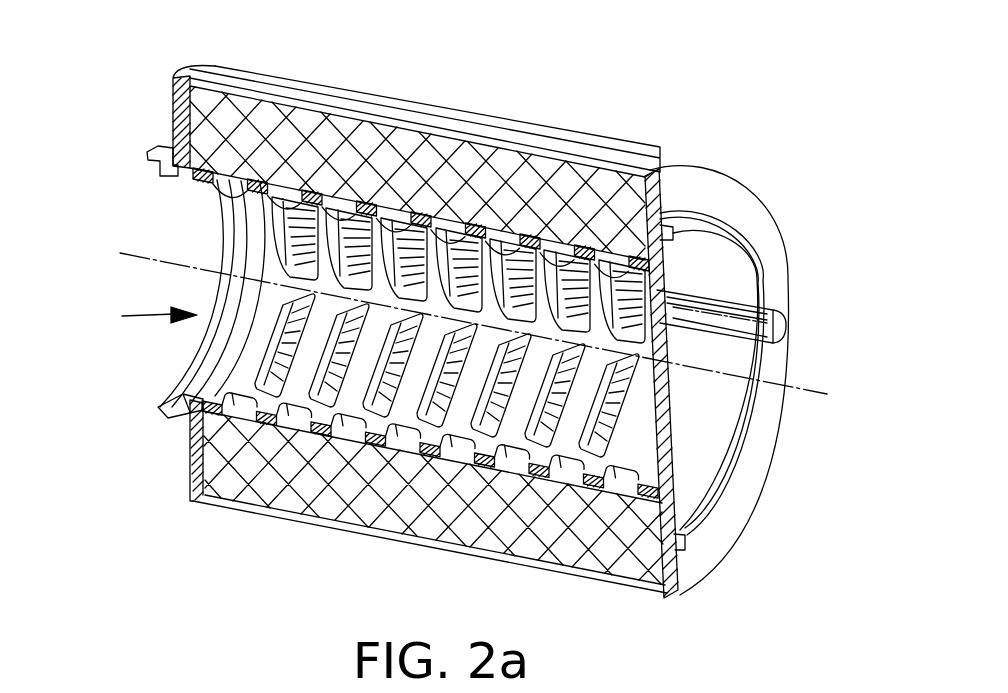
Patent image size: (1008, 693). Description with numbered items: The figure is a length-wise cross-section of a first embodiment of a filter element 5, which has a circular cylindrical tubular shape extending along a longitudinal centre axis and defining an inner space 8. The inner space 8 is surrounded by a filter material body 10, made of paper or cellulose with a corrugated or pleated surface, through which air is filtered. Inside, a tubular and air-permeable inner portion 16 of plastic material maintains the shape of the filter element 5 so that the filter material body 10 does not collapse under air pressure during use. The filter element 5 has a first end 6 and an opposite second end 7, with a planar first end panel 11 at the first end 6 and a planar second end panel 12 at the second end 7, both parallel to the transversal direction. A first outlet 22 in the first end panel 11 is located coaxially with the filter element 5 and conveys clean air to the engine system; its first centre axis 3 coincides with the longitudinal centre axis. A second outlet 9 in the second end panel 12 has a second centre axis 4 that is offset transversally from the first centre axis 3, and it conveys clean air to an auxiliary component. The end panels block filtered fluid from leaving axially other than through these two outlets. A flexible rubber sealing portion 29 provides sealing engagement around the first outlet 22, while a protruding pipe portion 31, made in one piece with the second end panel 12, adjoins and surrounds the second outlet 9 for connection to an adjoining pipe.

The first centre axis 3 is at (805, 396).
The second centre axis 4 is at (823, 337).
The filter element 5 is at (512, 108).
The first end 6 is at (191, 462).
The second end 7 is at (683, 566).
The inner space 8 is at (547, 415).
The second outlet 9 is at (789, 320).
The filter material body 10 is at (402, 502).
The first end panel 11 is at (186, 66).
The second end panel 12 is at (733, 200).
The inner portion 16 is at (310, 403).
The first outlet 22 is at (122, 316).
The sealing portion 29 is at (149, 148).
The protruding pipe portion 31 is at (787, 312).